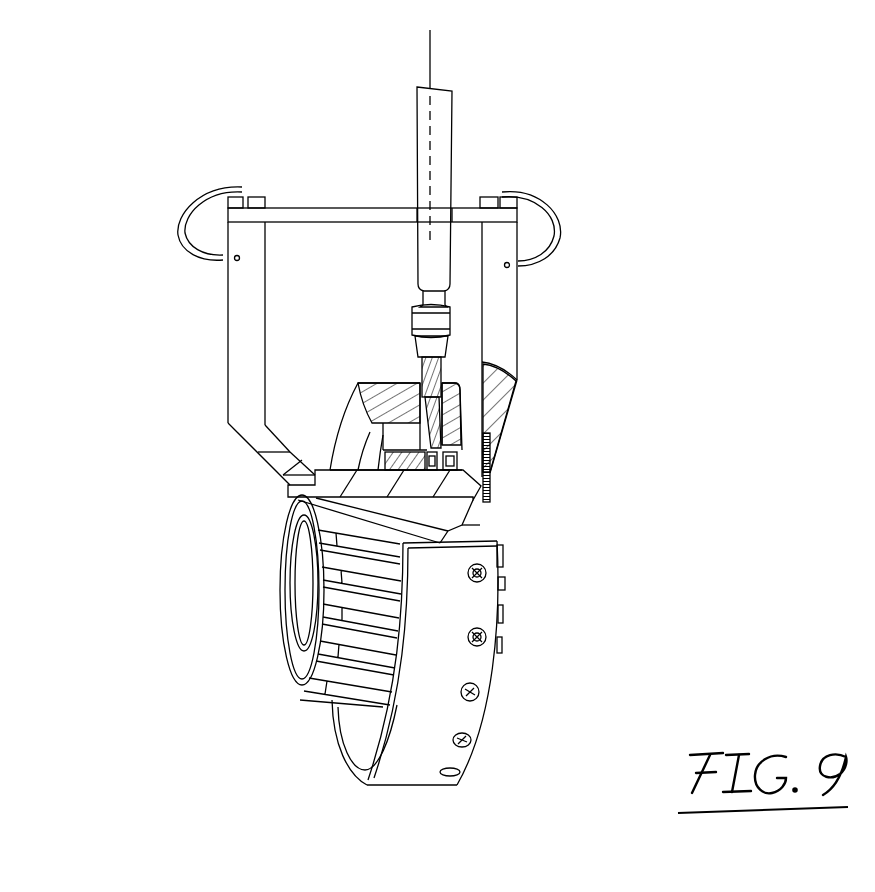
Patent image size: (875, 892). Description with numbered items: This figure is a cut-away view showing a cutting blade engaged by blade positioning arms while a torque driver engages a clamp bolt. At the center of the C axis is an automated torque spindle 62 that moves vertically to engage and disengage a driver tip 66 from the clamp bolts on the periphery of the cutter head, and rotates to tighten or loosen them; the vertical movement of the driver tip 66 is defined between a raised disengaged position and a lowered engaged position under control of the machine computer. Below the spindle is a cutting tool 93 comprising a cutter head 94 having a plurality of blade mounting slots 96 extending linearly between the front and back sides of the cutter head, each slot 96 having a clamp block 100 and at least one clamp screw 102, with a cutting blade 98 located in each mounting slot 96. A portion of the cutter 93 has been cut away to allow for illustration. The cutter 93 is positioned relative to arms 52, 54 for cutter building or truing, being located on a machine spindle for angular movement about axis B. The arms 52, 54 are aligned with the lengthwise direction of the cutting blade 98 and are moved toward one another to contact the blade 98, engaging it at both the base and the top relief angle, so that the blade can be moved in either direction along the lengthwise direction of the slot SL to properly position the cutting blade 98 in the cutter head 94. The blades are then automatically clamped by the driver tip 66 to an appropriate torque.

The C axis C is at (437, 53).
The torque spindle 62 is at (443, 131).
The driver tip 66 is at (437, 372).
The arm 54 is at (242, 392).
The arm 52 is at (505, 360).
The clamp screw 102 is at (420, 392).
The clamp block 100 is at (393, 460).
The cutting blade 98 is at (335, 480).
The blade mounting slot 96 is at (410, 515).
The axis B is at (307, 582).
The cutting tool 93 is at (515, 661).
The cutter head 94 is at (470, 607).
The lengthwise direction of the slot SL is at (522, 483).